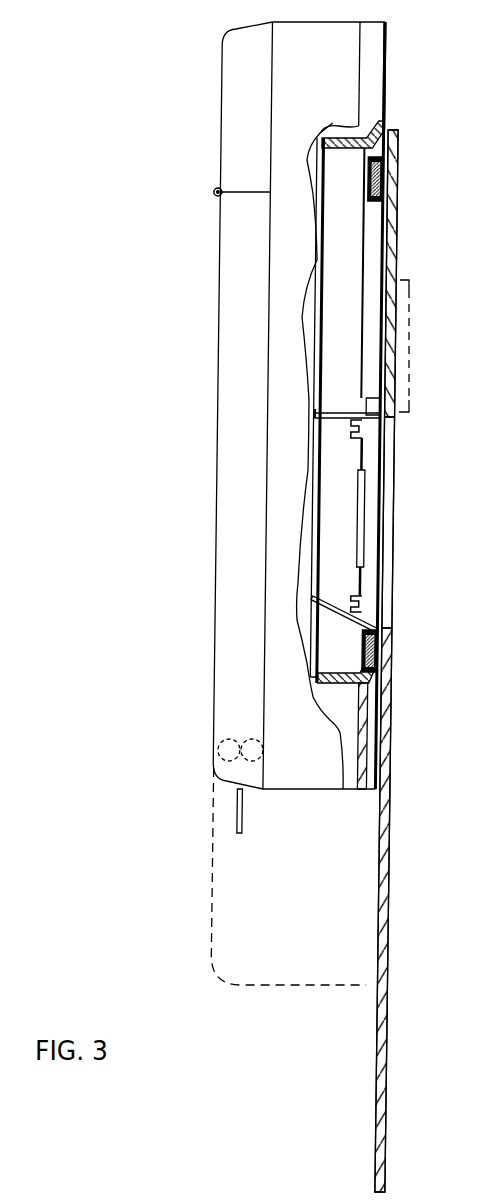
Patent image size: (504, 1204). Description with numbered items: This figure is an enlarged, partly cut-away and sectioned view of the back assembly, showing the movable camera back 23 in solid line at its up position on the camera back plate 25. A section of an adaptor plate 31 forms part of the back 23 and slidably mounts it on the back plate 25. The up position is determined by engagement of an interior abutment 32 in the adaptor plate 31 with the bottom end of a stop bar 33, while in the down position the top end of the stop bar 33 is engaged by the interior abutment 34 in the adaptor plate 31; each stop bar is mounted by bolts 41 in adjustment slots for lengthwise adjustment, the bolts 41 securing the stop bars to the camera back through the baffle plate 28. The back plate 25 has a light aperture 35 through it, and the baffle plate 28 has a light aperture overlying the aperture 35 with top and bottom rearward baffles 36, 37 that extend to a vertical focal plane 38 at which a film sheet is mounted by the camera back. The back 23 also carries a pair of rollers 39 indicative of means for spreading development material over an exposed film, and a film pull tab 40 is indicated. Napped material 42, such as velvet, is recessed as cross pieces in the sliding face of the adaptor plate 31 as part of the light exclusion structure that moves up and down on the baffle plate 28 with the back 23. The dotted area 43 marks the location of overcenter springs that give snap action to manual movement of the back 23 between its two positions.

The movable camera back 23 is at (219, 273).
The camera back plate 25 is at (398, 217).
The baffle plate 28 is at (393, 443).
The adaptor plate 31 is at (388, 128).
The interior abutment 32 is at (388, 648).
The stop bar 33 is at (372, 507).
The interior abutment 34 is at (371, 205).
The light aperture 35 is at (387, 548).
The top rearward baffle 36 is at (317, 412).
The bottom rearward baffle 37 is at (316, 632).
The vertical focal plane 38 is at (307, 537).
The rollers 39 is at (218, 745).
The film pull tab 40 is at (237, 807).
The bolts 41 is at (358, 609).
The napped material 42 is at (388, 172).
The dotted area 43 is at (410, 327).